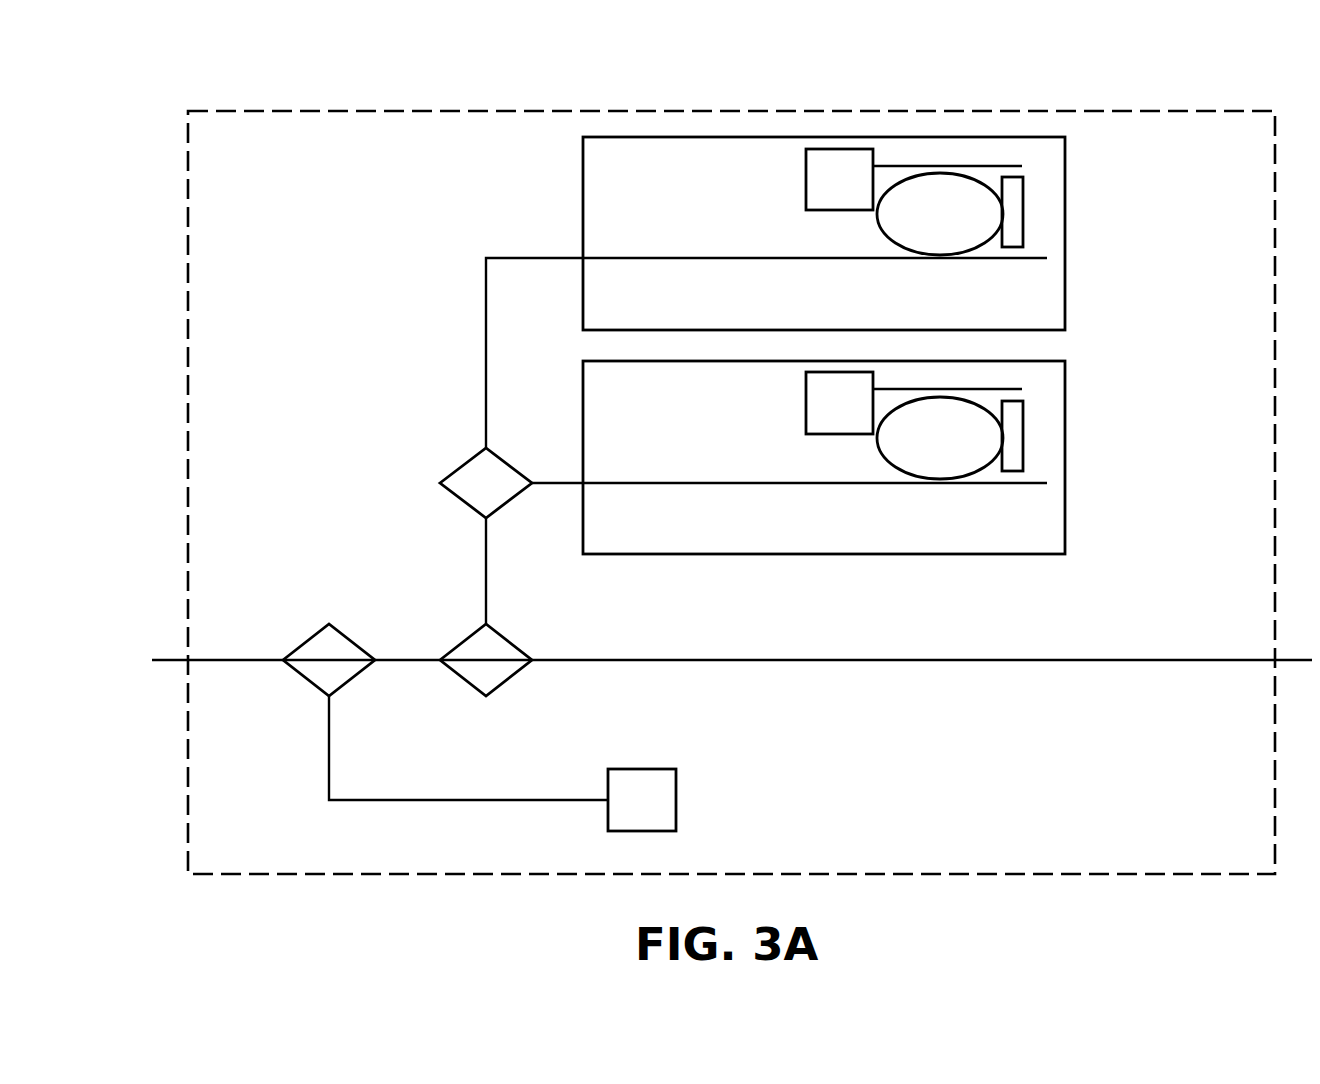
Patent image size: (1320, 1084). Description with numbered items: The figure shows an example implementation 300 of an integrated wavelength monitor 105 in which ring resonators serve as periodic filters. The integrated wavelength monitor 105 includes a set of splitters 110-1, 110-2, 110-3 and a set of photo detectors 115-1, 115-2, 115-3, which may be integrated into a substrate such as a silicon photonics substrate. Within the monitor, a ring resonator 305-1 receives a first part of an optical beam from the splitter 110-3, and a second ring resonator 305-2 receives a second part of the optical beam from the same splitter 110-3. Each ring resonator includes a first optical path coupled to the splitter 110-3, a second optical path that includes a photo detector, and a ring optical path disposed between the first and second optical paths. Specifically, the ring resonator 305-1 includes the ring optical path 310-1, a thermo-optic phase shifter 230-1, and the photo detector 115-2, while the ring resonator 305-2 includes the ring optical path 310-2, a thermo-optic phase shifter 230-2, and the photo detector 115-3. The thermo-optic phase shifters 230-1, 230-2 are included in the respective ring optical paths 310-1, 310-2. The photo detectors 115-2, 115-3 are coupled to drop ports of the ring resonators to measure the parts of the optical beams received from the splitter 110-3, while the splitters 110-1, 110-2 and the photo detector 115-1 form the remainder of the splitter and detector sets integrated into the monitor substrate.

The example implementation 300 is at (188, 62).
The integrated wavelength monitor 105 is at (731, 475).
The ring resonator 305-2 is at (676, 196).
The ring resonator 305-1 is at (668, 418).
The photo detector 115-3 is at (864, 178).
The photo detector 115-2 is at (864, 401).
The photo detector 115-1 is at (666, 798).
The ring optical path 310-2 is at (886, 232).
The ring optical path 310-1 is at (886, 456).
The thermo-optic phase shifter 230-2 is at (1028, 243).
The thermo-optic phase shifter 230-1 is at (1028, 467).
The splitter 110-1 is at (301, 671).
The splitter 110-2 is at (458, 671).
The splitter 110-3 is at (458, 494).